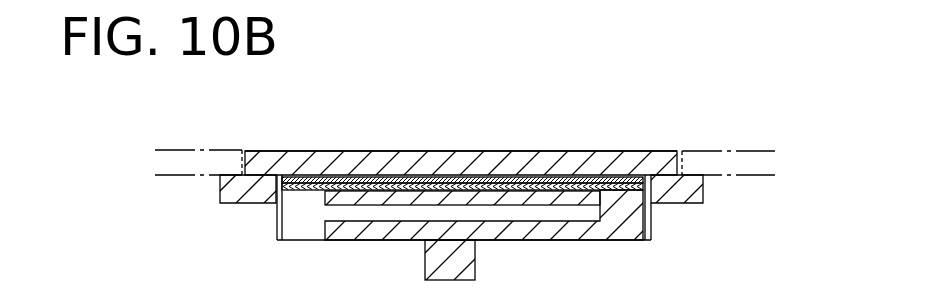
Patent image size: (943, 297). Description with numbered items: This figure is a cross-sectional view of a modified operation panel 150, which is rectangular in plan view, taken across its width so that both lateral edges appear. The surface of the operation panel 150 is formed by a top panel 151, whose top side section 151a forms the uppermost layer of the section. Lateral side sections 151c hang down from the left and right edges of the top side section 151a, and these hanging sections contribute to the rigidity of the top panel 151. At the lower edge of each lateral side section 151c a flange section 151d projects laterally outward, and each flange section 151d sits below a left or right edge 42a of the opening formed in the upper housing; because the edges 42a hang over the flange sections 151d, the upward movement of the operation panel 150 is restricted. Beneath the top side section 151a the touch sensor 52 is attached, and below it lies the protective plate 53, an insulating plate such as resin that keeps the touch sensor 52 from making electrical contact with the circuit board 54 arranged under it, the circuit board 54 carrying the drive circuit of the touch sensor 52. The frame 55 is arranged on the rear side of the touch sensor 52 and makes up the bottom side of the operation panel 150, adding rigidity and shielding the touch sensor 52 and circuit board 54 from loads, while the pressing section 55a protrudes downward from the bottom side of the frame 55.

The edge of opening 42a is at (237, 150).
The operation panel 150 is at (462, 172).
The top panel 151 is at (462, 156).
The top side section 151a is at (443, 160).
The lateral side section 151c is at (273, 190).
The flange section 151d is at (232, 192).
The protective plate 53 is at (318, 180).
The touch sensor 52 is at (367, 188).
The circuit board 54 is at (398, 200).
The frame 55 is at (354, 232).
The pressing section 55a is at (467, 257).